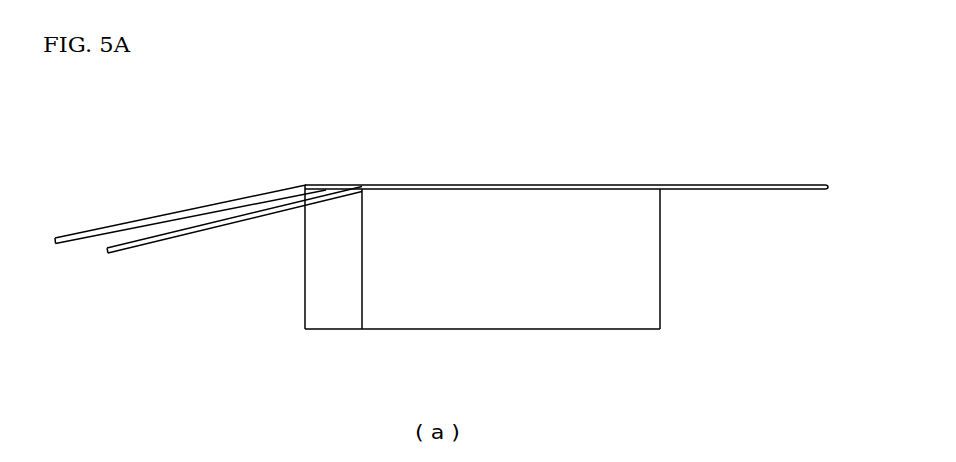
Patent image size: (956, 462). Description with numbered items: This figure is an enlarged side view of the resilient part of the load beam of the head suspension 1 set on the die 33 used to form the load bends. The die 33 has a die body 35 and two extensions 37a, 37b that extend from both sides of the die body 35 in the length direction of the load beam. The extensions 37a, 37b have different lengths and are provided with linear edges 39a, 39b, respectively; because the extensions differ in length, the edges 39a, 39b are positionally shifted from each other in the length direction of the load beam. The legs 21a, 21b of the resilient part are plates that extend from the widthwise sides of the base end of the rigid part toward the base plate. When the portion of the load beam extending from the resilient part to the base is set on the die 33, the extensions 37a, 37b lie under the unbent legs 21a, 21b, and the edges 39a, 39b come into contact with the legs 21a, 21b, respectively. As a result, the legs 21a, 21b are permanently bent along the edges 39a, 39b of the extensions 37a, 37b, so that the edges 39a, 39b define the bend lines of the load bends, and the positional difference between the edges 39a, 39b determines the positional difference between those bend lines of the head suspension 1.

The head suspension 1 is at (767, 181).
The leg 21a is at (225, 228).
The leg 21b is at (247, 193).
The die 33 is at (662, 295).
The die body 35 is at (610, 310).
The extension 37a is at (417, 313).
The extension 37b is at (332, 315).
The linear edge 39a is at (362, 186).
The linear edge 39b is at (306, 185).